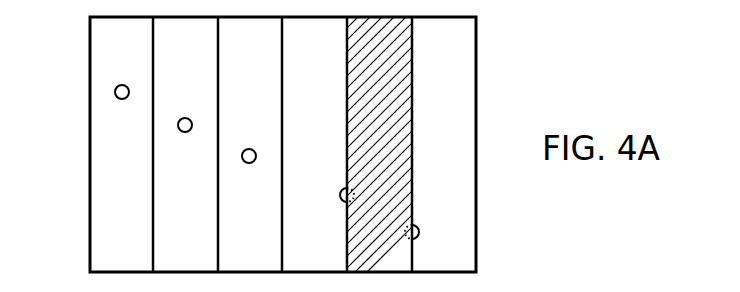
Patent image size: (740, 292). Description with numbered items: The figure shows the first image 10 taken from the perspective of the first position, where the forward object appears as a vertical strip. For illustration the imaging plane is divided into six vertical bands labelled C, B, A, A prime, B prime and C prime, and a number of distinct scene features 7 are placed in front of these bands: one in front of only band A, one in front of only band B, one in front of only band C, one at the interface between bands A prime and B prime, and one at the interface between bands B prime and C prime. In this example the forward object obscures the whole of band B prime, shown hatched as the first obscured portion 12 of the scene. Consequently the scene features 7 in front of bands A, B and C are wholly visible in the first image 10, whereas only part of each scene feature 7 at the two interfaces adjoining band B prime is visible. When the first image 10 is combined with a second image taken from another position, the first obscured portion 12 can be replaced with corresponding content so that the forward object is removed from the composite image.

The first image 10 is at (89, 18).
The distinct scene feature 7 is at (125, 99).
The first obscured portion 12 is at (393, 148).